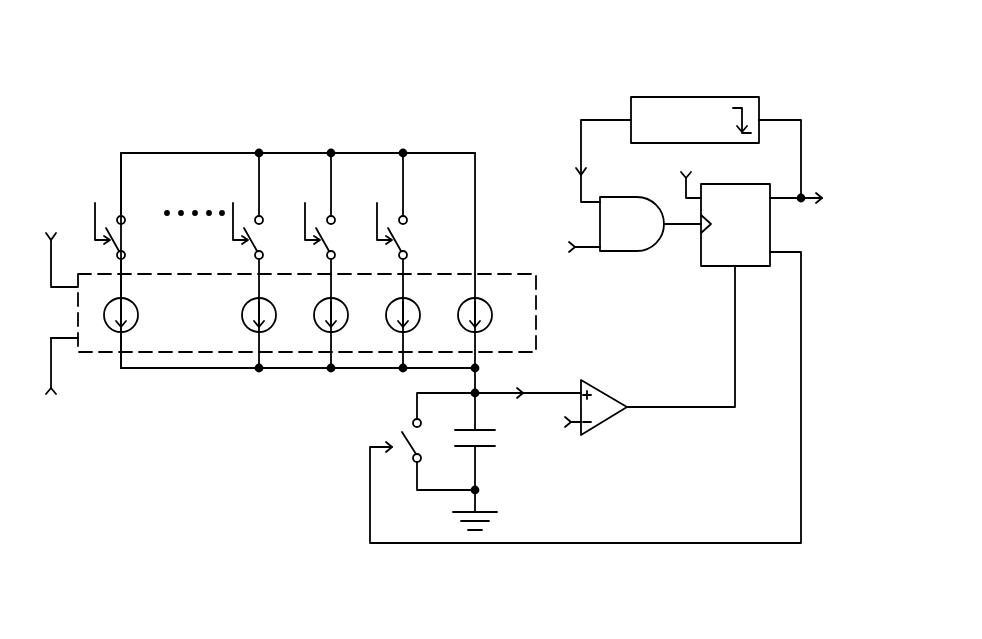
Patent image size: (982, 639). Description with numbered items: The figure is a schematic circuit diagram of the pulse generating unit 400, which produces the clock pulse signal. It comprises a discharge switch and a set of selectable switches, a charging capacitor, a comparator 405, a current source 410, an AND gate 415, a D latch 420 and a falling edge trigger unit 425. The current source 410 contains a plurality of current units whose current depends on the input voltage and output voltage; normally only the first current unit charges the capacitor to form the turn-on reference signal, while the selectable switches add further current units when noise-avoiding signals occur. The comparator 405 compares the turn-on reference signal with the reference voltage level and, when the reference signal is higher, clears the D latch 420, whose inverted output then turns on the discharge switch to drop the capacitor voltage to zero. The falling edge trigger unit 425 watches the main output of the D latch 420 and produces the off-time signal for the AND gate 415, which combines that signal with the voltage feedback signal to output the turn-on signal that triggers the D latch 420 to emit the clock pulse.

The pulse generating unit 400 is at (438, 311).
The comparator 405 is at (605, 415).
The current source 410 is at (537, 316).
The AND gate 415 is at (625, 197).
The D latch 420 is at (700, 262).
The falling edge trigger unit 425 is at (705, 134).